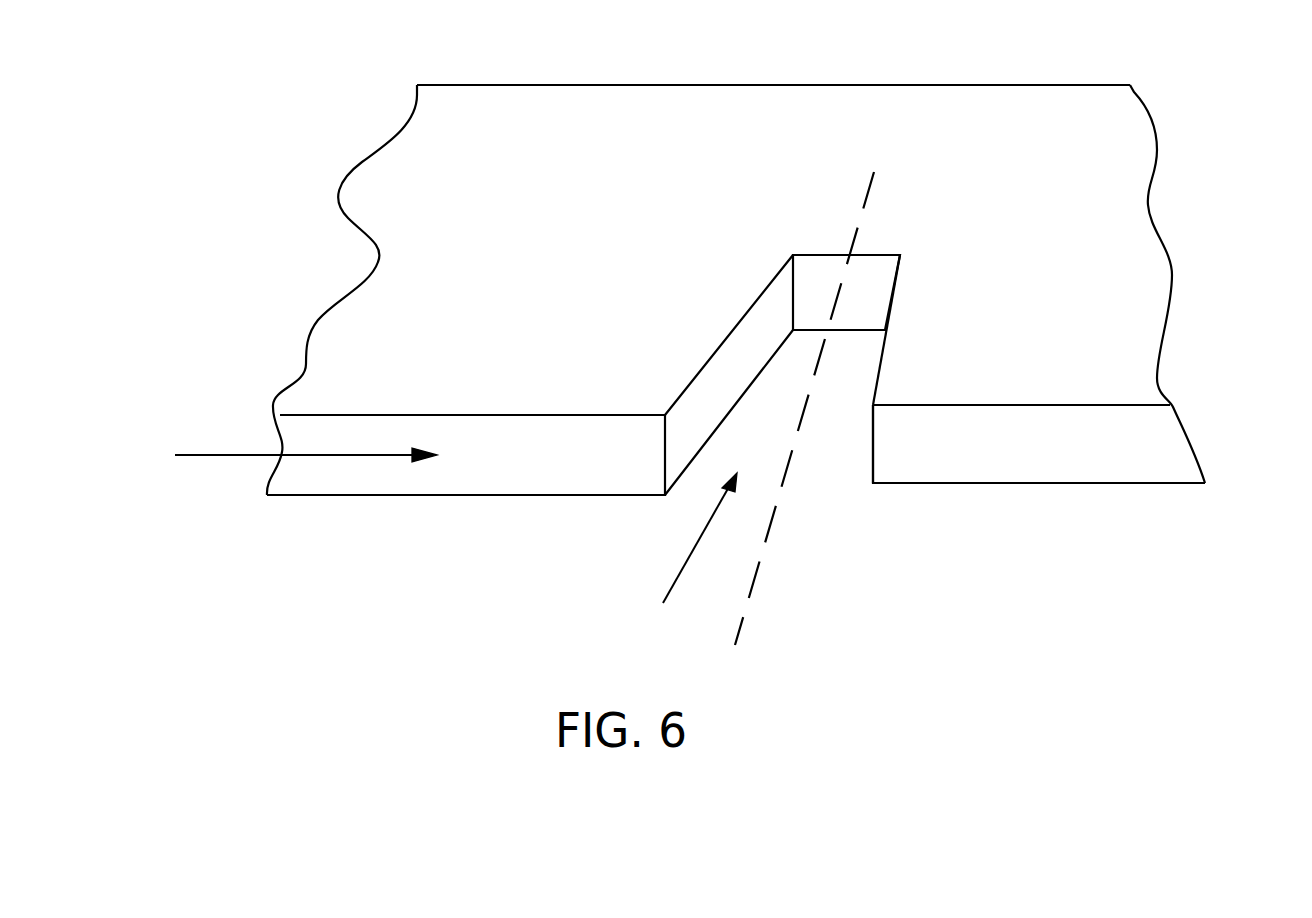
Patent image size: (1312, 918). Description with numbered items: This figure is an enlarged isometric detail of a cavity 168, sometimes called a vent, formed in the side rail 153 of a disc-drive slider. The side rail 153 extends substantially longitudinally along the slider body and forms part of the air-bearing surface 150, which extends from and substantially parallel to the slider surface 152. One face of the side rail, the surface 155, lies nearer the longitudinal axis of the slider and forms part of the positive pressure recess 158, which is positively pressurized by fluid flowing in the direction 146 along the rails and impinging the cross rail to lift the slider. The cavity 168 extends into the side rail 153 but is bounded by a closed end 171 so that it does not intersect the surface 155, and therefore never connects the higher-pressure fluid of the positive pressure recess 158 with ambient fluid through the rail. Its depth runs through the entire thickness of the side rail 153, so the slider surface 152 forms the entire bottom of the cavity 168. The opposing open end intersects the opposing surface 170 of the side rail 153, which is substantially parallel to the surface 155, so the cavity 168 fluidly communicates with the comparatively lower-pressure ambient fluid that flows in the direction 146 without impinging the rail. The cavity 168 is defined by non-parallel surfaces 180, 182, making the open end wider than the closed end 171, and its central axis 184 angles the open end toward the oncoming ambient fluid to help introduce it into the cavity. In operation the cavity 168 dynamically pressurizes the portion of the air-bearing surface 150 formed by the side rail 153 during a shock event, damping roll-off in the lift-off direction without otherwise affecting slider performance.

The direction 146 is at (218, 456).
The air-bearing surface 150 is at (540, 233).
The slider surface 152 is at (838, 465).
The side rail 153 is at (1100, 309).
The surface of the side rail 155 is at (857, 85).
The positive pressure recess 158 is at (618, 43).
The cavity 168 is at (684, 555).
The opposing surface of the side rail 170 is at (1007, 451).
The closed end 171 is at (820, 275).
The non-parallel surface 180 is at (727, 382).
The non-parallel surface 182 is at (877, 383).
The central axis 184 is at (744, 599).